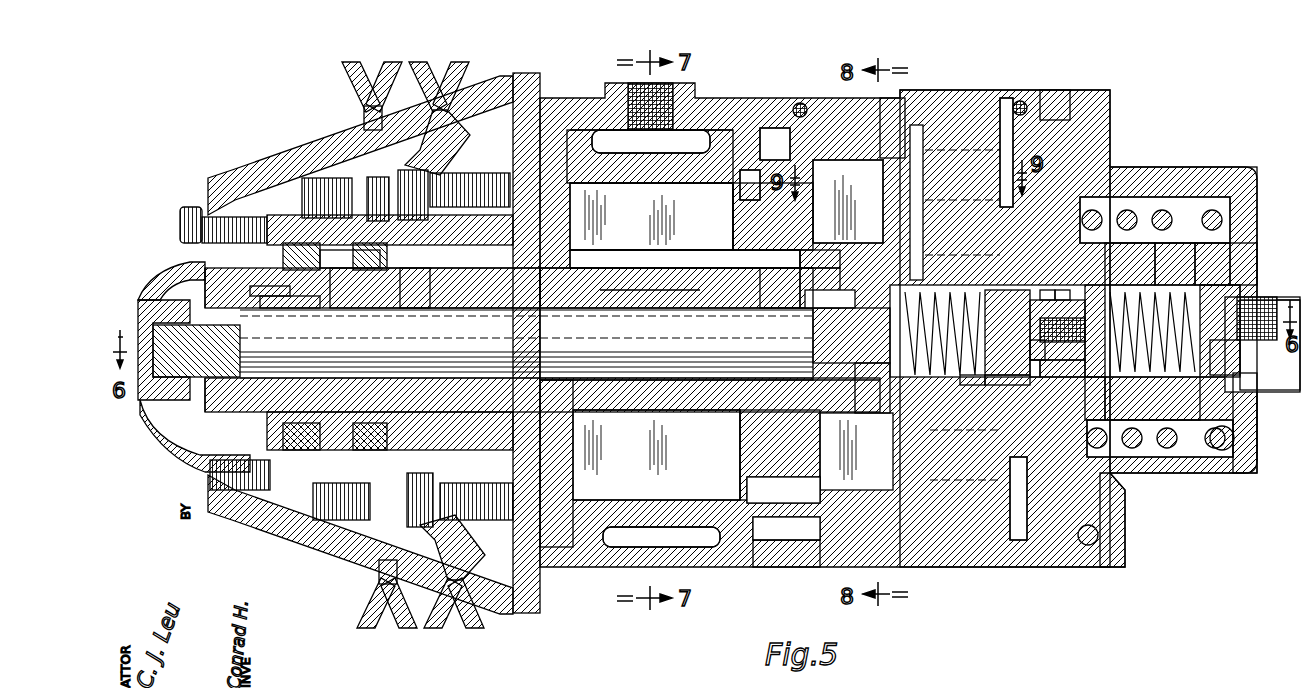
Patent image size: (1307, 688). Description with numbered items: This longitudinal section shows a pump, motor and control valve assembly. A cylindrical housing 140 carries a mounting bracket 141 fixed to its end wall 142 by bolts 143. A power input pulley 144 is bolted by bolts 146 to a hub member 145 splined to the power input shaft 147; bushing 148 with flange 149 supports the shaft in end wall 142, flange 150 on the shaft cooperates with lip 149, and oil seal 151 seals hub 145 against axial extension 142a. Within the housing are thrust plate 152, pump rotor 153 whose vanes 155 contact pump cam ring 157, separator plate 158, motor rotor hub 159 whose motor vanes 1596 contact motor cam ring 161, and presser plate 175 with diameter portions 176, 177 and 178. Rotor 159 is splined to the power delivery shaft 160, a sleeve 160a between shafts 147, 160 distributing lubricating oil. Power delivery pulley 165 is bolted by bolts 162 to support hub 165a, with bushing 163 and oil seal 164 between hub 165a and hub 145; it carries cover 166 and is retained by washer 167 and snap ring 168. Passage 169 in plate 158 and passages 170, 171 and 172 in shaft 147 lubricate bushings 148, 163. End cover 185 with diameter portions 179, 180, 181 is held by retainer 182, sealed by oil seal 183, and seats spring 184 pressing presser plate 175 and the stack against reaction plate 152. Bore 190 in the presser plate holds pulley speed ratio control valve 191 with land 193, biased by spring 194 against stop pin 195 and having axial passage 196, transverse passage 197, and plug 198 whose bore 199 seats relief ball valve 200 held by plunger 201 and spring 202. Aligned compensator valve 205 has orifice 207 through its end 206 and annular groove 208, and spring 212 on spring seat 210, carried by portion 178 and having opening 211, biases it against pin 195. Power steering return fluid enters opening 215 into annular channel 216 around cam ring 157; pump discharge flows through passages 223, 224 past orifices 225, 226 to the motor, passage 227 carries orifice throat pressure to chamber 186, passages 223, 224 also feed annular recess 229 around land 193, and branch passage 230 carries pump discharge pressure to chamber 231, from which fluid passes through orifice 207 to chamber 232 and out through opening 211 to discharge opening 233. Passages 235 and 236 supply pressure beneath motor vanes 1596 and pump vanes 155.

The cylindrical housing 140 is at (970, 92).
The mounting bracket 141 is at (516, 75).
The end wall 142 is at (418, 381).
The axial extension 142a is at (405, 480).
The bolts 143 is at (368, 505).
The power input pulley 144 is at (450, 68).
The hub member 145 is at (305, 488).
The bolts 146 is at (380, 177).
The power input shaft 147 is at (548, 305).
The bushing 148 is at (370, 300).
The upstanding flange 149 is at (500, 207).
The upstanding flange 150 is at (556, 463).
The oil seal 151 is at (395, 235).
The thrust plate 152 is at (555, 125).
The pump rotor 153 is at (615, 300).
The vane 155 is at (628, 175).
The pump cam ring 157 is at (661, 537).
The separator plate 158 is at (685, 256).
The motor rotor hub 159 is at (830, 311).
The motor vane 1596 is at (777, 205).
The power delivery shaft 160 is at (575, 395).
The sleeve 160a is at (445, 308).
The motor cam ring 161 is at (825, 105).
The bolts 162 is at (190, 205).
The bushing 163 is at (318, 300).
The oil seal 164 is at (298, 242).
The power delivery pulley 165 is at (352, 66).
The support hub 165a is at (305, 178).
The cover 166 is at (140, 305).
The washer 167 is at (195, 440).
The snap ring 168 is at (200, 275).
The passage 169 is at (812, 300).
The passage 170 is at (774, 300).
The passage 171 is at (455, 300).
The passage 172 is at (282, 300).
The presser plate 175 is at (1007, 115).
The large diameter section 176 is at (935, 120).
The intermediate diameter portion 177 is at (1110, 197).
The small diameter portion 178 is at (1250, 250).
The large diameter portion 179 is at (1110, 520).
The intermediate diameter portion 180 is at (1178, 197).
The small diameter portion 181 is at (1257, 400).
The O-ring retainer 182 is at (1090, 547).
The oil seal 183 is at (1050, 102).
The spring 184 is at (1225, 450).
The end cover 185 is at (1218, 167).
The chamber 186 is at (851, 335).
The axially extending bore 190 is at (1052, 411).
The pulley speed ratio control valve 191 is at (1042, 290).
The land 193 is at (1050, 302).
The spring 194 is at (872, 388).
The stop pin 195 is at (1035, 314).
The central axial passage 196 is at (1044, 350).
The transverse passage 197 is at (1070, 276).
The plug 198 is at (1007, 313).
The hollow bore 199 is at (975, 402).
The pressure relief ball valve 200 is at (1007, 403).
The plunger 201 is at (1057, 324).
The spring 202 is at (1056, 396).
The compensator valve 205 is at (1215, 360).
The end 206 is at (1095, 405).
The constant area orifice 207 is at (1127, 264).
The annular groove 208 is at (1152, 404).
The spring seat 210 is at (1255, 297).
The central opening 211 is at (1241, 357).
The spring 212 is at (1168, 264).
The opening 215 is at (651, 141).
The annular channel 216 is at (605, 125).
The axially extending passage 223 is at (750, 216).
The axially extending passage 224 is at (793, 479).
The pulley speed ratio control orifice 225 is at (652, 216).
The pulley speed ratio control orifice 226 is at (768, 545).
The passage 227 is at (775, 128).
The annular recess 229 is at (963, 315).
The branch passage 230 is at (808, 540).
The chamber 231 is at (1165, 458).
The chamber 232 is at (1207, 264).
The discharge opening 233 is at (1270, 345).
The passage 235 is at (745, 318).
The passage 236 is at (763, 327).